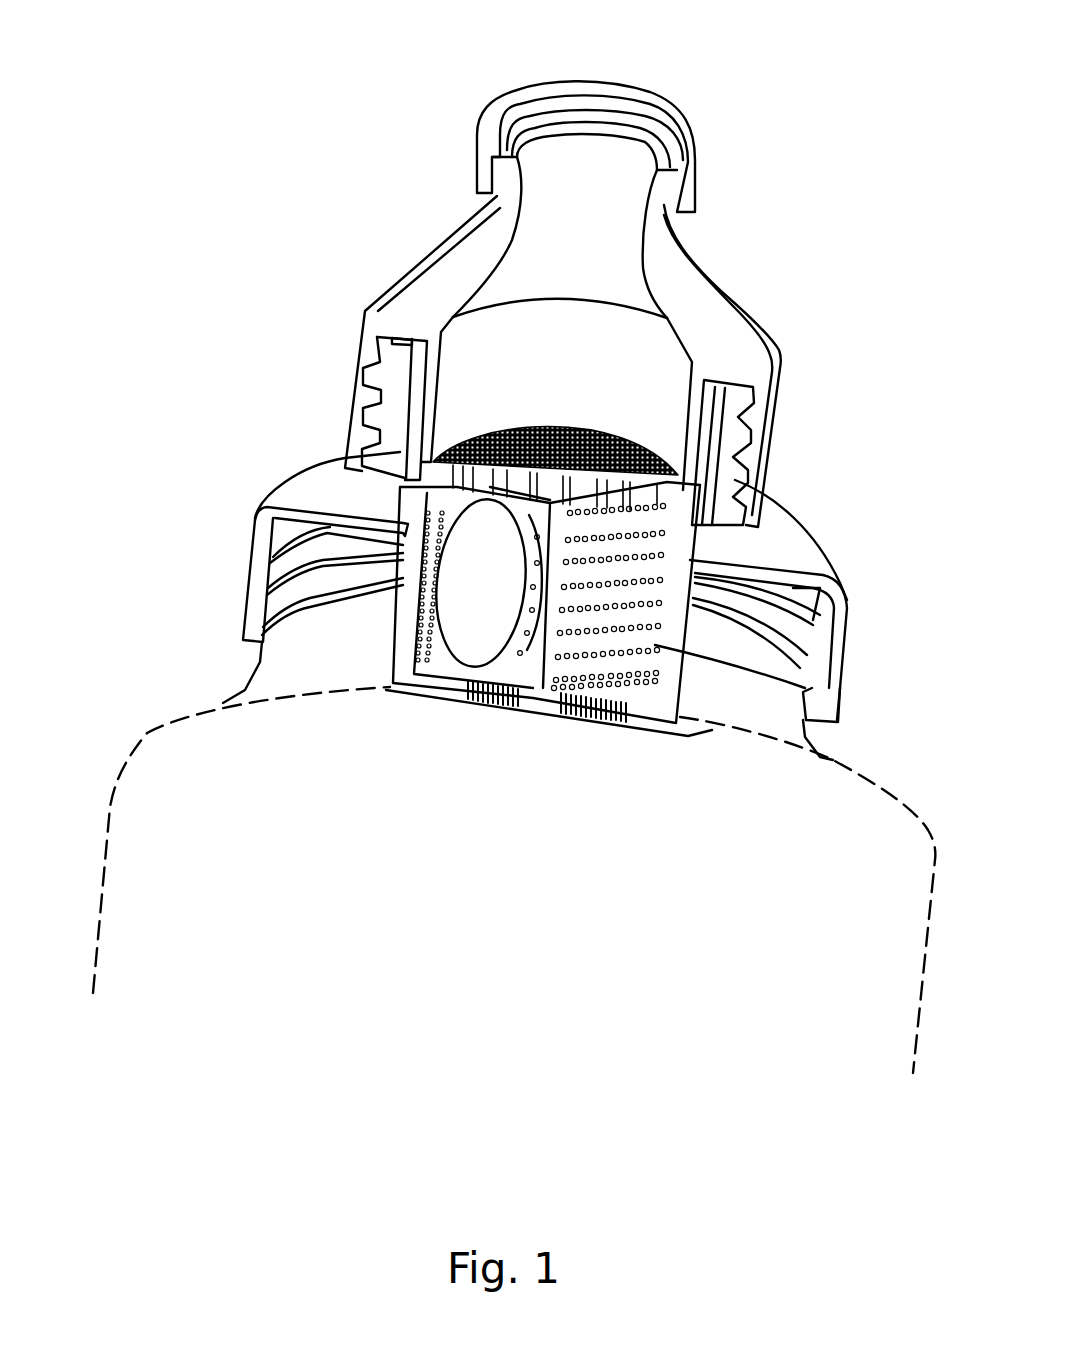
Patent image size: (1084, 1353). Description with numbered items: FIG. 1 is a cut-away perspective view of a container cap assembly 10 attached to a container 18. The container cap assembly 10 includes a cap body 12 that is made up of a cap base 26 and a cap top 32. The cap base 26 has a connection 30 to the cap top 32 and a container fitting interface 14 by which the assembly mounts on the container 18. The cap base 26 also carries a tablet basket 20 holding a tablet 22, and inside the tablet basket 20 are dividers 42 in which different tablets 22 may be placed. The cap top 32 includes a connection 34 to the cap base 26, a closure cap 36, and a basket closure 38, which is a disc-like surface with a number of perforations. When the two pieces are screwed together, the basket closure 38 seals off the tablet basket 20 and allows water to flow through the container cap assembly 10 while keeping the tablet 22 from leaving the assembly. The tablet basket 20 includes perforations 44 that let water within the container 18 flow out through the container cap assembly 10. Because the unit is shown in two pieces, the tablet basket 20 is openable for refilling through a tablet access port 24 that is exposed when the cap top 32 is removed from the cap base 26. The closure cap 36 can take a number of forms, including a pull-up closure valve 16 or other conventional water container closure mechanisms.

The container cap assembly 10 is at (381, 168).
The cap body 12 is at (312, 494).
The container fitting interface 14 is at (280, 588).
The pull-up closure valve 16 is at (508, 172).
The container 18 is at (140, 748).
The tablet basket 20 is at (668, 592).
The tablet 22 is at (470, 657).
The tablet access port 24 is at (380, 452).
The cap base 26 is at (830, 560).
The connection 30 is at (382, 360).
The cap top 32 is at (725, 332).
The connection 34 is at (760, 460).
The closure cap 36 is at (648, 104).
The basket closure 38 is at (560, 428).
The dividers 42 is at (843, 693).
The perforations 44 is at (637, 720).